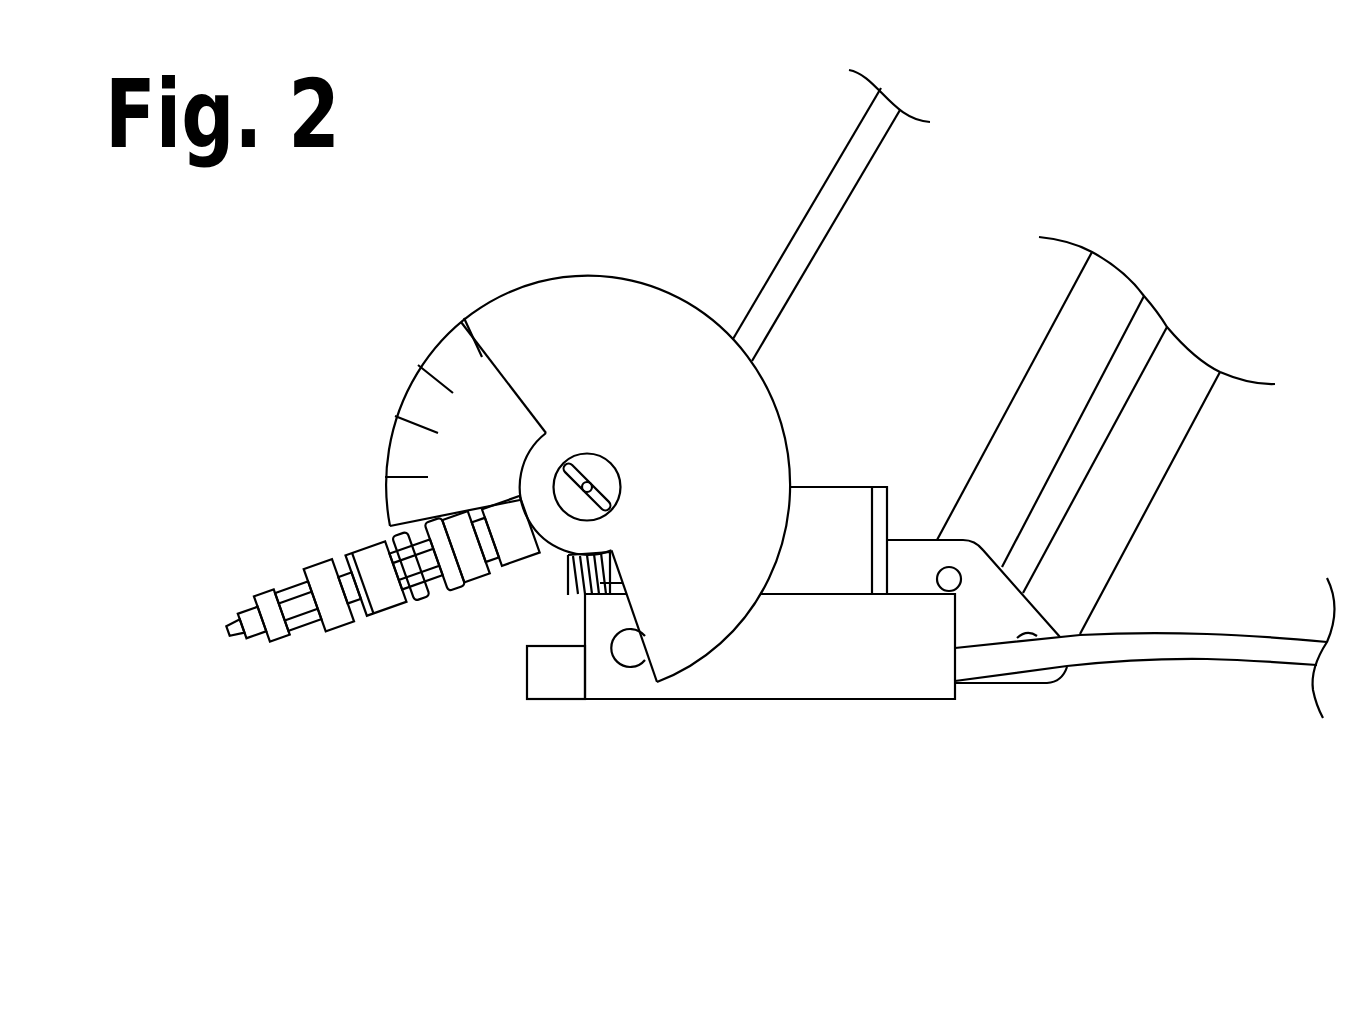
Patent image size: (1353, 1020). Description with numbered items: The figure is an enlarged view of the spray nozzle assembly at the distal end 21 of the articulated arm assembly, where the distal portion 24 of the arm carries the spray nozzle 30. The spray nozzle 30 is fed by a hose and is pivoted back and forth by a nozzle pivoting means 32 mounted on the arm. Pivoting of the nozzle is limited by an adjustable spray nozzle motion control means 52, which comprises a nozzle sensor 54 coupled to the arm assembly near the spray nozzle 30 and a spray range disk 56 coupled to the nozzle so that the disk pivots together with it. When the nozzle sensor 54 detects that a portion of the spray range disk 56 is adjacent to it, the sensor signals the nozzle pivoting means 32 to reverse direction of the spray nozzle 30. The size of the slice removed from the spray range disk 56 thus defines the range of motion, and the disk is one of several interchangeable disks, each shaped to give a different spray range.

The distal end 21 is at (527, 669).
The distal portion 24 is at (1077, 365).
The spray nozzle 30 is at (278, 614).
The nozzle pivoting means 32 is at (815, 557).
The adjustable spray nozzle motion control means 52 is at (740, 670).
The nozzle sensor 54 is at (625, 648).
The spray range disk 56 is at (543, 333).